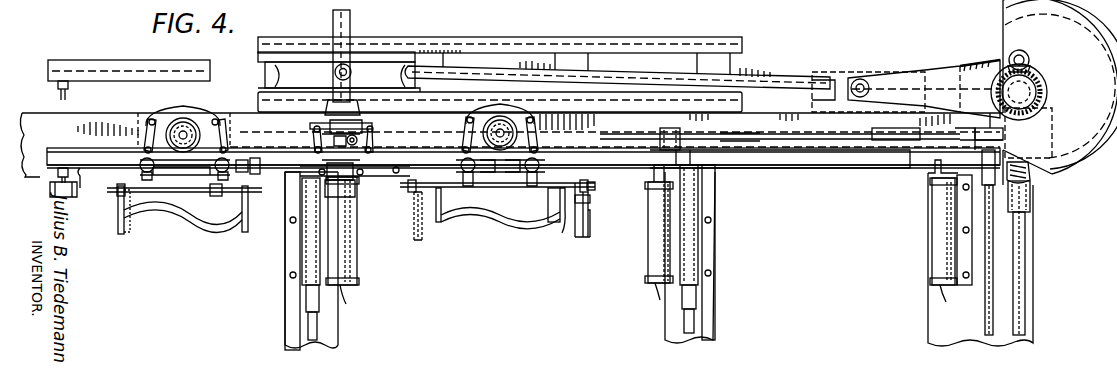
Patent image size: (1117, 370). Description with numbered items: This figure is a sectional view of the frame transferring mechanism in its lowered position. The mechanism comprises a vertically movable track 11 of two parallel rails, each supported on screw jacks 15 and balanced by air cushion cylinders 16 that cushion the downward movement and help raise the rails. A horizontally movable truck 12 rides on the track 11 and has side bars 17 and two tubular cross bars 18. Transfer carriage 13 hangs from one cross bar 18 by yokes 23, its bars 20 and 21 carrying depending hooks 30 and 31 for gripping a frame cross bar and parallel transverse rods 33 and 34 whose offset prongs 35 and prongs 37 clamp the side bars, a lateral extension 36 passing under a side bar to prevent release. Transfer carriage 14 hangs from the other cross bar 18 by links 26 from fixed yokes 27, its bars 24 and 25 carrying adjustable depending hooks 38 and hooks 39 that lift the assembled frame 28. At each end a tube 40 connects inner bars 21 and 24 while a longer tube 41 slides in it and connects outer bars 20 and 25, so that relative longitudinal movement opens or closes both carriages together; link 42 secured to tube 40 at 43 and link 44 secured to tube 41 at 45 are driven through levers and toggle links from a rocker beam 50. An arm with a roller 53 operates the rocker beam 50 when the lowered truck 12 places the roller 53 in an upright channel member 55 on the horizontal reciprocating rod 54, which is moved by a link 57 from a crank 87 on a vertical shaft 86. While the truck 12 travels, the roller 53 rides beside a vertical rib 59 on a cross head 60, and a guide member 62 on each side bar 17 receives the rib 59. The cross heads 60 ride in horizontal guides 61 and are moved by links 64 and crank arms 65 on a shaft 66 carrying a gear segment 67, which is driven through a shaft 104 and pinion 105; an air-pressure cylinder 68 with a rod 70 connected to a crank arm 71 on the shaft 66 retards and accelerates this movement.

The vertically movable track 11 is at (73, 146).
The horizontally movable truck 12 is at (255, 113).
The transfer carriage 13 is at (548, 210).
The transfer carriage 14 is at (184, 200).
The screw jack 15 is at (305, 310).
The air cushion cylinder 16 is at (77, 192).
The side bar 17 is at (310, 127).
The tubular cross bar 18 is at (186, 120).
The carriage bar 20 is at (538, 170).
The carriage bar 21 is at (464, 160).
The yoke 23 is at (467, 121).
The carriage bar 24 is at (256, 158).
The carriage bar 25 is at (138, 168).
The link 26 is at (146, 124).
The yoke 27 is at (183, 107).
The assembled frame 28 is at (196, 221).
The depending hook 30 is at (563, 230).
The depending hook 31 is at (441, 205).
The transverse rod 33 is at (582, 183).
The transverse rod 34 is at (408, 190).
The prong 35 is at (588, 204).
The lateral extension 36 is at (590, 236).
The prong 37 is at (422, 230).
The adjustable depending hook 38 is at (118, 209).
The depending hook 39 is at (248, 215).
The tube 40 is at (357, 192).
The tube 41 is at (520, 214).
The link 42 is at (272, 179).
The securing point 43 is at (238, 175).
The link 44 is at (396, 176).
The securing point 45 is at (482, 218).
The rocker beam 50 is at (322, 141).
The roller 53 is at (370, 136).
The horizontal reciprocating rod 54 is at (823, 150).
The upright channel member 55 is at (678, 133).
The link 57 is at (1003, 134).
The vertical rib 59 is at (347, 30).
The cross head 60 is at (392, 56).
The horizontal guide 61 is at (507, 50).
The guide member 62 is at (335, 103).
The link 64 is at (766, 80).
The crank arm 65 is at (940, 76).
The shaft 66 is at (1040, 90).
The gear segment 67 is at (1073, 30).
The air-pressure cylinder 68 is at (833, 74).
The rod 70 is at (993, 60).
The crank arm 71 is at (1030, 64).
The vertical shaft 86 is at (985, 309).
The crank 87 is at (1006, 143).
The shaft 104 is at (1025, 298).
The pinion 105 is at (1030, 174).